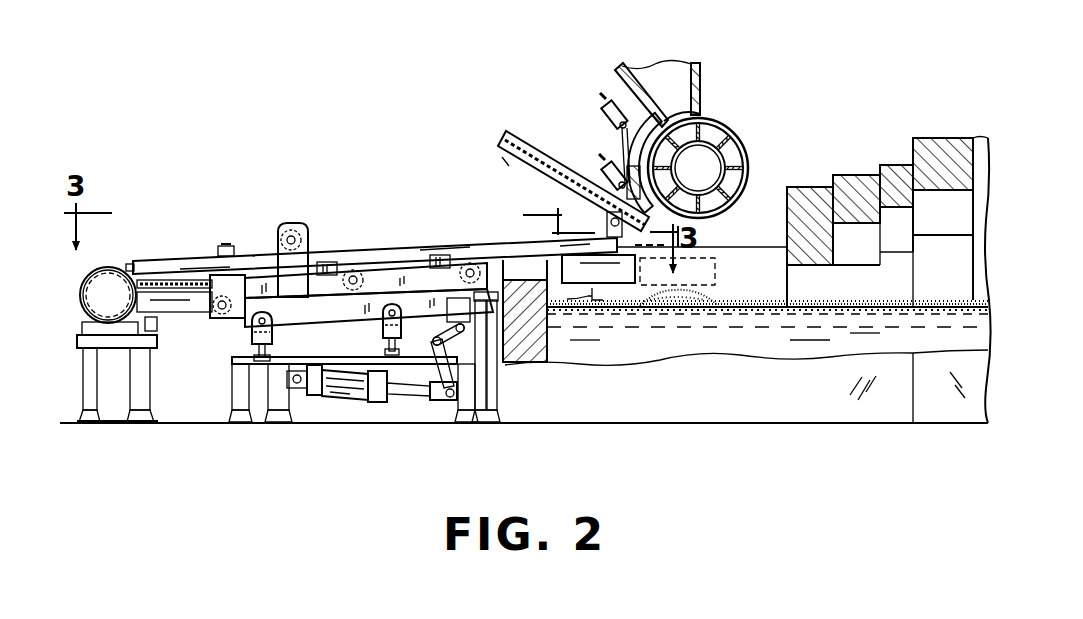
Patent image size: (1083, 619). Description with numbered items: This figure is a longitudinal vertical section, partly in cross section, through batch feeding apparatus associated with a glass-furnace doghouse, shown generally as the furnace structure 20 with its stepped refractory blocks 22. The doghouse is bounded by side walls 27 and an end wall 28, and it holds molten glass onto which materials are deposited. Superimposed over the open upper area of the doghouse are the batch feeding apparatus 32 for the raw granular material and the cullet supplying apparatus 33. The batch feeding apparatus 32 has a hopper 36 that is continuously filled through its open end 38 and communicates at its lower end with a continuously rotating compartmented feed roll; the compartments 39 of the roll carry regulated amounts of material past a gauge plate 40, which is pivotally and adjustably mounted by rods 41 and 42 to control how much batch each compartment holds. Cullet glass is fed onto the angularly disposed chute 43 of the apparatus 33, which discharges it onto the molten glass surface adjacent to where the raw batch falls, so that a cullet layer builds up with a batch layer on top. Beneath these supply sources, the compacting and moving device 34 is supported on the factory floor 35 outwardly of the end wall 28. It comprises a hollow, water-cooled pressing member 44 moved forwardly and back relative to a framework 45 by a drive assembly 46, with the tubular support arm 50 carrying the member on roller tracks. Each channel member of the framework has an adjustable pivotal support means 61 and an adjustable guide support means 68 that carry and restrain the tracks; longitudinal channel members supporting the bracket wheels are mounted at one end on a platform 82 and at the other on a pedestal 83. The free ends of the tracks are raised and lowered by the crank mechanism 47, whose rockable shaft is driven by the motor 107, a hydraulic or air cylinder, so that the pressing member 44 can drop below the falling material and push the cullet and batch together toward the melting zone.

The kiln wall structure 20 is at (968, 115).
The stepped refractory blocks 22 is at (927, 145).
The doghouse side walls 27 is at (790, 407).
The doghouse end walls 28 is at (530, 355).
The batch feeding apparatus 32 is at (722, 86).
The cullet supplying apparatus 33 is at (495, 152).
The batch compacting and moving device 34 is at (348, 250).
The factory floor 35 is at (168, 423).
The hopper 36 is at (668, 72).
The open end of hopper 38 is at (705, 118).
The compartments of feed roll 39 is at (744, 183).
The gauge plate 40 is at (690, 200).
The rod 41 is at (602, 108).
The rod 42 is at (603, 165).
The chute 43 is at (528, 142).
The pressing member 44 is at (628, 287).
The framework 45 is at (320, 327).
The drive assembly 46 is at (112, 266).
The crank mechanism 47 is at (405, 400).
The tubular support arm 50 is at (462, 250).
The adjustable pivotal support means 61 is at (250, 338).
The adjustable guide support means 68 is at (377, 328).
The platform 82 is at (148, 360).
The pedestal 83 is at (488, 392).
The motor 107 is at (336, 395).